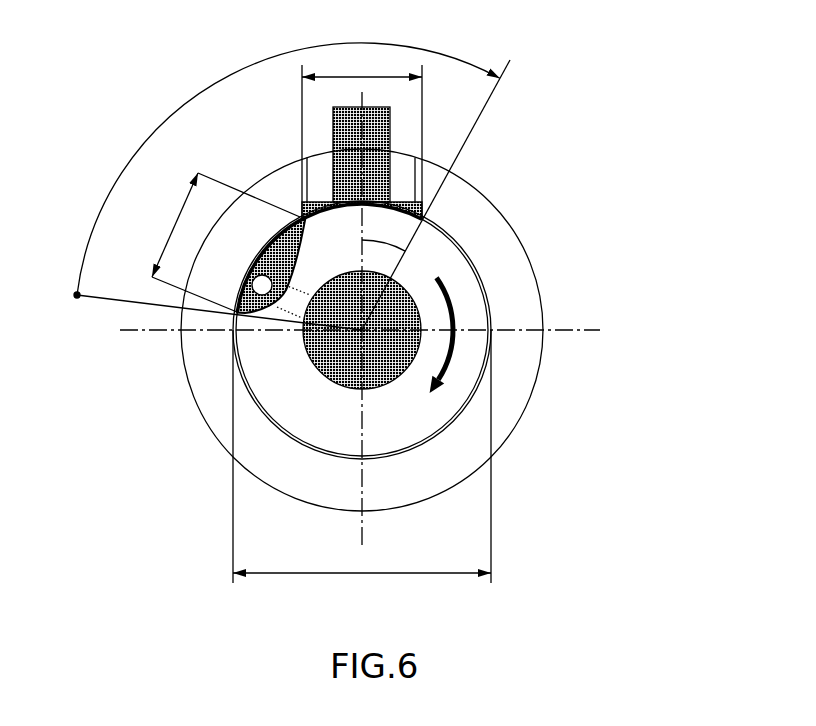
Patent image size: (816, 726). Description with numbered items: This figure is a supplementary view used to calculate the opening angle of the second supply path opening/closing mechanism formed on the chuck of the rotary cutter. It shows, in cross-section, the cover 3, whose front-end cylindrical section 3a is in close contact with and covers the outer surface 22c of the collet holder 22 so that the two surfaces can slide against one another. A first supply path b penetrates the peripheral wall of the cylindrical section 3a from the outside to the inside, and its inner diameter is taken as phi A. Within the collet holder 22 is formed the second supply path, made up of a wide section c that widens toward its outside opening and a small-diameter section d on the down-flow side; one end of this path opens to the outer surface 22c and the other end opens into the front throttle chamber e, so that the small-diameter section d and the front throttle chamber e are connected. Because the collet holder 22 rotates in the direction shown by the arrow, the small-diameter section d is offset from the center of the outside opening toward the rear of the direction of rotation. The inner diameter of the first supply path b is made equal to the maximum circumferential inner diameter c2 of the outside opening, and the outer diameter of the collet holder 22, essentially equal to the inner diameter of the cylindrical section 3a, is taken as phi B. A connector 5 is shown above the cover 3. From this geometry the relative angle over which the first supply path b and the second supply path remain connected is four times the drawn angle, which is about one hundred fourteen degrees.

The cover 3 is at (387, 330).
The cylindrical section 3a is at (525, 278).
The connector 5 is at (402, 133).
The collet holder 22 is at (362, 369).
The outer surface of the collet holder 22c is at (362, 330).
The first supply path b is at (407, 207).
The wide section c is at (277, 257).
The maximum inner diameter of the outside opening c2 is at (222, 242).
The small-diameter section d is at (237, 312).
The front throttle chamber e is at (327, 350).